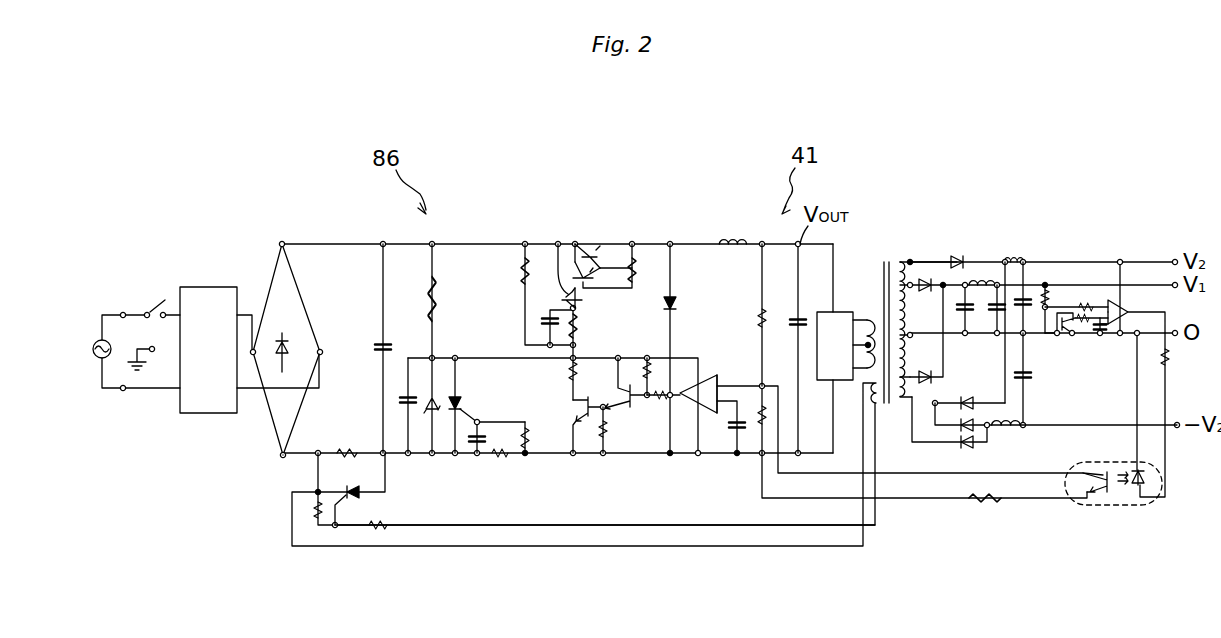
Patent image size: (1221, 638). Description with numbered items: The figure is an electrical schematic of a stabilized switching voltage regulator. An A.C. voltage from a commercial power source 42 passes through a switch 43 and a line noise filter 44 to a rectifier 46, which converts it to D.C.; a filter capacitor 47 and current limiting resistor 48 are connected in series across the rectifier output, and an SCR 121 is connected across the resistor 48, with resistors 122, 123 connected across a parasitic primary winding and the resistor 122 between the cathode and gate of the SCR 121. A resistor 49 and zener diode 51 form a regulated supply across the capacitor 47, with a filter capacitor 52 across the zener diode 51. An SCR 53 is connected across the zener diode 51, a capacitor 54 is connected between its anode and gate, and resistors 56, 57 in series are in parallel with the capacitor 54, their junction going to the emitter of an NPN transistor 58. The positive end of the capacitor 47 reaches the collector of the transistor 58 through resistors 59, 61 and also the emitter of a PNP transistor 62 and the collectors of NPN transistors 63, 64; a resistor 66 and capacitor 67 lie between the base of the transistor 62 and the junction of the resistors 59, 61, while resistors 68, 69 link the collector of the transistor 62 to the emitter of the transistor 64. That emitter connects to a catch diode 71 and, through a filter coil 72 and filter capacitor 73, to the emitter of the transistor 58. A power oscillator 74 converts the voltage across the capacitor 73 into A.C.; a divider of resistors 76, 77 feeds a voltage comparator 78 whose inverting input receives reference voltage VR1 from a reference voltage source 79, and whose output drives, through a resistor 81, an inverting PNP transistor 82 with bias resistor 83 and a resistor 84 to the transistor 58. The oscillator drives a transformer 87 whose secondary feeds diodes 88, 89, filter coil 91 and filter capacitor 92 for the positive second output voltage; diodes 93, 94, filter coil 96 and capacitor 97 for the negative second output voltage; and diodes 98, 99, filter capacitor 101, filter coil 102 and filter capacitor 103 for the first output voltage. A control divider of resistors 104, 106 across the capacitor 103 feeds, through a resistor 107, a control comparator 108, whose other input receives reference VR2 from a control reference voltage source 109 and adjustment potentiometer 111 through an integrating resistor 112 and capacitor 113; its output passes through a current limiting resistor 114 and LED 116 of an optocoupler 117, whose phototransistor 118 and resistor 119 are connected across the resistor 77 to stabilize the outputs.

The commercial power source 42 is at (102, 326).
The switch 43 is at (154, 300).
The line noise filter 44 is at (212, 285).
The rectifier 46 is at (276, 447).
The filter capacitor 47 is at (363, 341).
The current limiting resistor 48 is at (347, 449).
The resistor 49 is at (438, 297).
The zener diode 51 is at (440, 400).
The filter capacitor 52 is at (402, 454).
The silicon controlled rectifier (SCR) 53 is at (466, 407).
The capacitor 54 is at (472, 456).
The resistor 56 is at (532, 444).
The resistor 57 is at (504, 456).
The NPN transistor 58 is at (580, 440).
The resistor 59 is at (520, 271).
The resistor 61 is at (568, 372).
The PNP transistor 62 is at (560, 294).
The NPN transistor 63 is at (590, 256).
The NPN transistor 64 is at (588, 253).
The resistor 66 is at (580, 327).
The capacitor 67 is at (541, 323).
The resistor 68 is at (637, 282).
The resistor 69 is at (636, 248).
The flywheel or catch diode 71 is at (676, 298).
The filter coil 72 is at (733, 243).
The filter capacitor 73 is at (789, 314).
The power oscillator 74 is at (842, 312).
The resistor 76 is at (762, 312).
The resistor 77 is at (737, 434).
The voltage comparator 78 is at (706, 376).
The reference voltage source 79 is at (718, 414).
The resistor 81 is at (676, 410).
The PNP transistor 82 is at (612, 394).
The bias resistor 83 is at (613, 428).
The resistor 84 is at (646, 434).
The transformer 87 is at (868, 320).
The diode 88 is at (958, 258).
The diode 89 is at (970, 398).
The filter coil 91 is at (991, 282).
The filter capacitor 92 is at (1024, 296).
The diode 93 is at (964, 442).
The diode 94 is at (956, 428).
The filter coil 96 is at (1006, 428).
The capacitor 97 is at (1030, 378).
The diode 98 is at (924, 280).
The diode 99 is at (930, 388).
The filter capacitor 101 is at (948, 258).
The filter coil 102 is at (970, 283).
The filter capacitor 103 is at (991, 335).
The resistor 104 is at (1024, 260).
The resistor 106 is at (1057, 333).
The resistor 107 is at (1086, 303).
The control comparator or amplifier 108 is at (1130, 299).
The control reference voltage source 109 is at (1100, 339).
The adjustment potentiometer 111 is at (1106, 327).
The resistor 112 is at (1110, 298).
The capacitor 113 is at (1137, 330).
The current limiting resistor 114 is at (1170, 352).
The light emitting diode (LED) 116 is at (1140, 498).
The optocoupler 117 is at (1112, 506).
The phototransistor 118 is at (1096, 494).
The resistor 119 is at (985, 502).
The SCR 121 is at (352, 503).
The resistor 122 is at (308, 510).
The resistor 123 is at (383, 530).
The D.C. reference voltage VR1 is at (760, 386).
The control reference voltage VR2 is at (1168, 363).